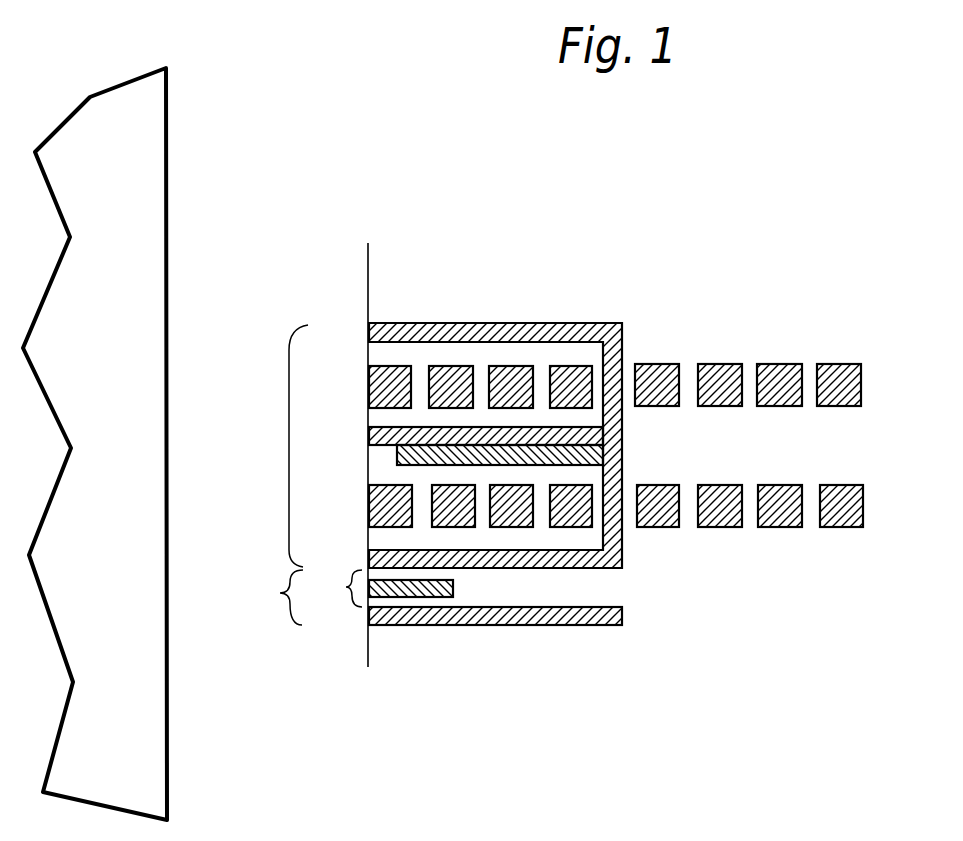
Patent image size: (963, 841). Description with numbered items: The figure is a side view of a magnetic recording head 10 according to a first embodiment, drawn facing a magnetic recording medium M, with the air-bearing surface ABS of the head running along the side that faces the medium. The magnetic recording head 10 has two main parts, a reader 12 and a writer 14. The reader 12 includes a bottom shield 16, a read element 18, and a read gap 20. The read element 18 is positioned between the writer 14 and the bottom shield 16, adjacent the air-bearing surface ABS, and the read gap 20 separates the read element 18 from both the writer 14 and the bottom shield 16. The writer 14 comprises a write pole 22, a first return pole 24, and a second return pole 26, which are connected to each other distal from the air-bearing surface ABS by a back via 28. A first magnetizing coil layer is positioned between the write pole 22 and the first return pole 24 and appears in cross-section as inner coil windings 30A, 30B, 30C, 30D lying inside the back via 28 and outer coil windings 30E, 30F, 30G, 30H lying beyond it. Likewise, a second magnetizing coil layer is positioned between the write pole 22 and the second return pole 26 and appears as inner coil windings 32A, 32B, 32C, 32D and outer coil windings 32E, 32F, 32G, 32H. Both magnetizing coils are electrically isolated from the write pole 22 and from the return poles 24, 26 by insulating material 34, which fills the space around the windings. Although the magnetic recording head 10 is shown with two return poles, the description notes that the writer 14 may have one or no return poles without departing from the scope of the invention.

The magnetic recording medium M is at (167, 133).
The air-bearing surface ABS is at (369, 439).
The magnetic recording head 10 is at (279, 289).
The reader 12 is at (271, 597).
The writer 14 is at (276, 446).
The bottom shield 16 is at (433, 620).
The read element 18 is at (453, 585).
The read gap 20 is at (338, 588).
The write pole 22 is at (368, 435).
The first return pole 24 is at (500, 333).
The second return pole 26 is at (613, 568).
The back via 28 is at (622, 325).
The inner coil winding 30A is at (392, 366).
The inner coil winding 30B is at (448, 366).
The inner coil winding 30C is at (520, 366).
The inner coil winding 30D is at (578, 366).
The outer coil winding 30E is at (662, 364).
The outer coil winding 30F is at (720, 364).
The outer coil winding 30G is at (778, 364).
The outer coil winding 30H is at (839, 364).
The inner coil winding 32A is at (393, 527).
The inner coil winding 32B is at (452, 527).
The inner coil winding 32C is at (512, 527).
The inner coil winding 32D is at (570, 527).
The outer coil winding 32E is at (653, 527).
The outer coil winding 32F is at (718, 527).
The outer coil winding 32G is at (783, 527).
The outer coil winding 32H is at (843, 527).
The insulating material 34 is at (378, 420).